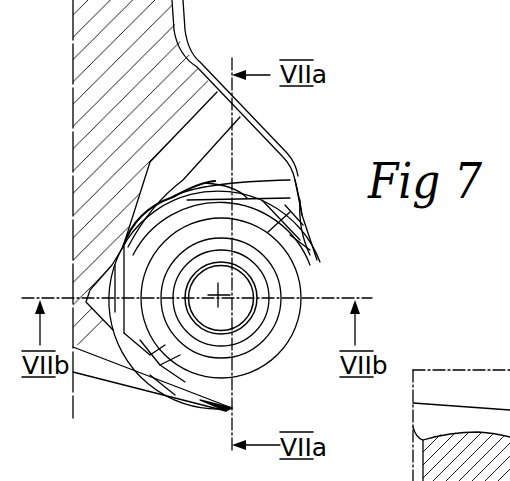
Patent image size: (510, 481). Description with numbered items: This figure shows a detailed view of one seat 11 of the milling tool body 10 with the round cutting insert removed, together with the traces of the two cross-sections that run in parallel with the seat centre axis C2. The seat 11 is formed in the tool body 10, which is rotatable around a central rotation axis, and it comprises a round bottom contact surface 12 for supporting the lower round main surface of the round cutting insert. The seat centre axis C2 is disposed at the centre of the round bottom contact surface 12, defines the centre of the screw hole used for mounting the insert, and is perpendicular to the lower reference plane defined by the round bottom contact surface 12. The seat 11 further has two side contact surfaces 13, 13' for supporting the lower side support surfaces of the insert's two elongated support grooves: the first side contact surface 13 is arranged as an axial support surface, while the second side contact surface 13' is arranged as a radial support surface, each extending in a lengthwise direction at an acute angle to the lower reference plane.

The tool body 10 is at (160, 52).
The seat 11 is at (303, 168).
The round bottom contact surface 12 is at (287, 281).
The side contact surface 13 is at (308, 227).
The second side contact surface 13' is at (147, 371).
The seat centre axis C2 is at (217, 294).